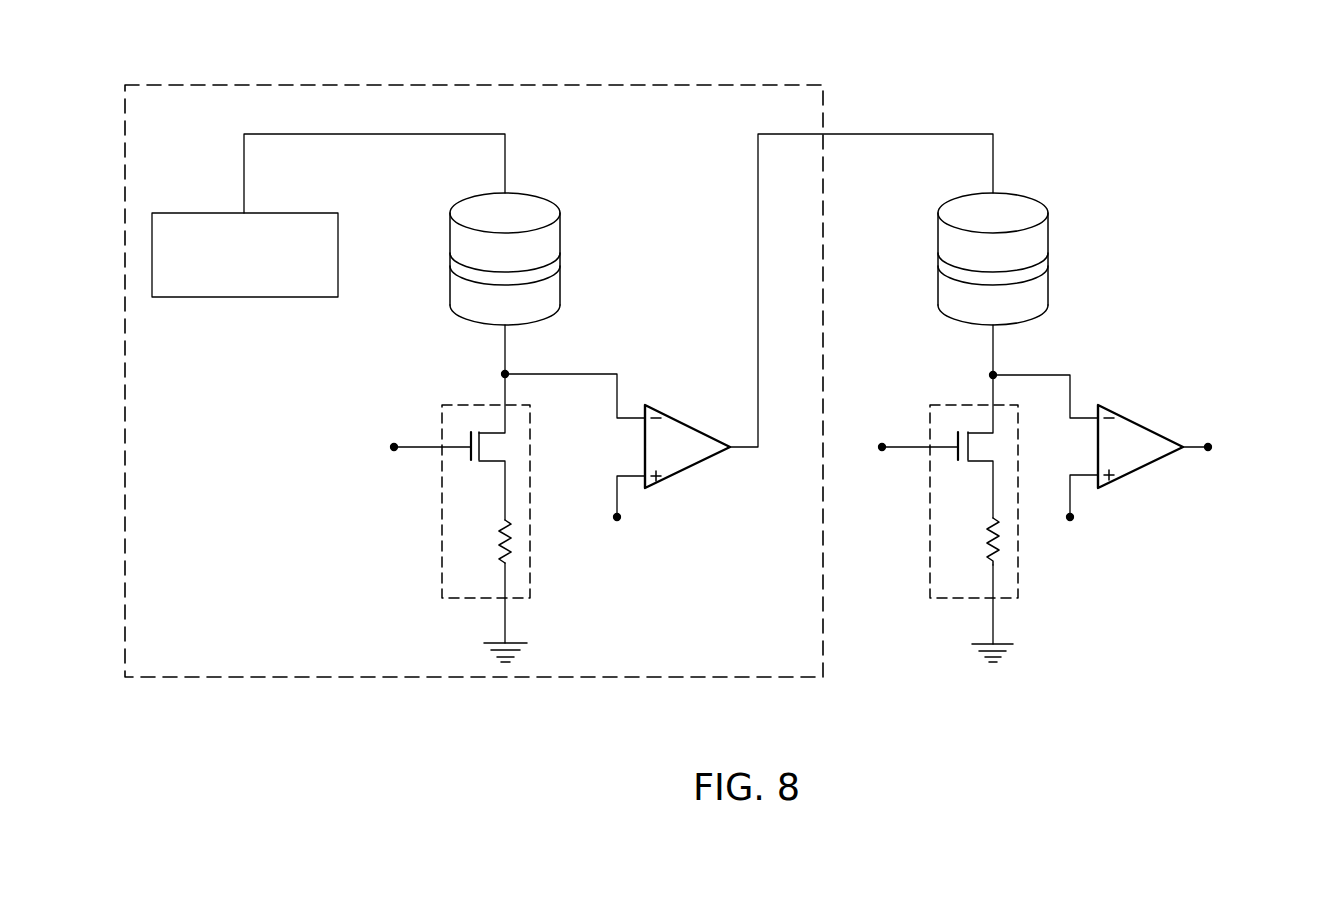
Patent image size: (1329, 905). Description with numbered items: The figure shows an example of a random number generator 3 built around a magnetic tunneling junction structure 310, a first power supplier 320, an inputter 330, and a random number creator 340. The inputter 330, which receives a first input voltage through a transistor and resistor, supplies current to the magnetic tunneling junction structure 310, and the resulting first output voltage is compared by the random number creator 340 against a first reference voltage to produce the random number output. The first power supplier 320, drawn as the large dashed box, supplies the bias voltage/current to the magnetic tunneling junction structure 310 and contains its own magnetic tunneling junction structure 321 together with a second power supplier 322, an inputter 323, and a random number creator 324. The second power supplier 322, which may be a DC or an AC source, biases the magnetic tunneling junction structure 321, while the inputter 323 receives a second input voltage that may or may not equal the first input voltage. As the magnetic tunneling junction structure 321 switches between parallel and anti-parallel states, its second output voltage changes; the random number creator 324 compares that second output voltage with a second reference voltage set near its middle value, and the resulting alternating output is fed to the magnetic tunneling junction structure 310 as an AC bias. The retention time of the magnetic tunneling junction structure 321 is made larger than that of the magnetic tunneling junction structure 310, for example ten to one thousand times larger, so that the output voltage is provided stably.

The random number generator 3 is at (1086, 119).
The magnetic tunneling junction structure 310 is at (1210, 271).
The first power supplier 320 is at (474, 678).
The magnetic tunneling junction structure 321 is at (636, 178).
The second power supplier 322 is at (244, 298).
The inputter 323 is at (442, 505).
The random number creator 324 is at (688, 472).
The inputter 330 is at (930, 505).
The random number creator 340 is at (1140, 470).